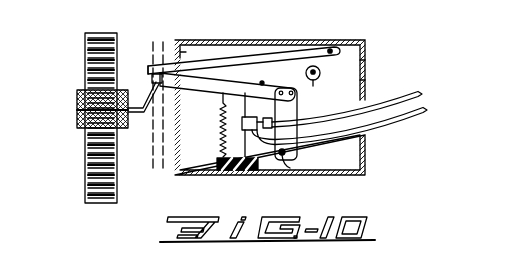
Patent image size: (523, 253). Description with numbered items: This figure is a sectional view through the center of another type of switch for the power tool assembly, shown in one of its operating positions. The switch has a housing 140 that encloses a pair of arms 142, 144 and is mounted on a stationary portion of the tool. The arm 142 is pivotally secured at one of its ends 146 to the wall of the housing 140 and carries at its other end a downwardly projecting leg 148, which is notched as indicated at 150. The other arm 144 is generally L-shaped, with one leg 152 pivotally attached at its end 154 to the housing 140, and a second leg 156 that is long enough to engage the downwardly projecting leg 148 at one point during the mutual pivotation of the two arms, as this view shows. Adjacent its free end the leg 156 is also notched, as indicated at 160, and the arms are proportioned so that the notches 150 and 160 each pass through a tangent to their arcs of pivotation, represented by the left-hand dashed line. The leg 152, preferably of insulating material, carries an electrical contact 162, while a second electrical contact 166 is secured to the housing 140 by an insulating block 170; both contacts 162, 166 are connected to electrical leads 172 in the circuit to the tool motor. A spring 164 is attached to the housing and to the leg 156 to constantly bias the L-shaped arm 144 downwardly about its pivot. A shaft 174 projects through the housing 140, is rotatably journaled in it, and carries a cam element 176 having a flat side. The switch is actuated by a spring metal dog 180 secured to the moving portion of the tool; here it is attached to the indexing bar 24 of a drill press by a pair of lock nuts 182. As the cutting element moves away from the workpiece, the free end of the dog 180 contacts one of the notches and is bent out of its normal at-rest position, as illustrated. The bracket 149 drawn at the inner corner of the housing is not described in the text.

The indexing bar 24 is at (90, 180).
The housing 140 is at (366, 43).
The arm 142 is at (280, 58).
The L-shaped arm 144 is at (262, 82).
The end of arm 146 is at (365, 52).
The downwardly projecting leg 148 is at (150, 68).
The mounting bracket 149 is at (183, 52).
The notch 150 is at (150, 113).
The leg 152 is at (293, 152).
The end of leg 154 is at (288, 168).
The second leg 156 is at (208, 92).
The notch 160 is at (173, 58).
The electrical contact 162 is at (295, 110).
The spring 164 is at (220, 131).
The second electrical contact 166 is at (242, 121).
The insulating block 170 is at (240, 170).
The electrical leads 172 is at (400, 96).
The shaft 174 is at (313, 80).
The cam element 176 is at (321, 71).
The spring metal dog 180 is at (152, 78).
The lock nuts 182 is at (78, 118).